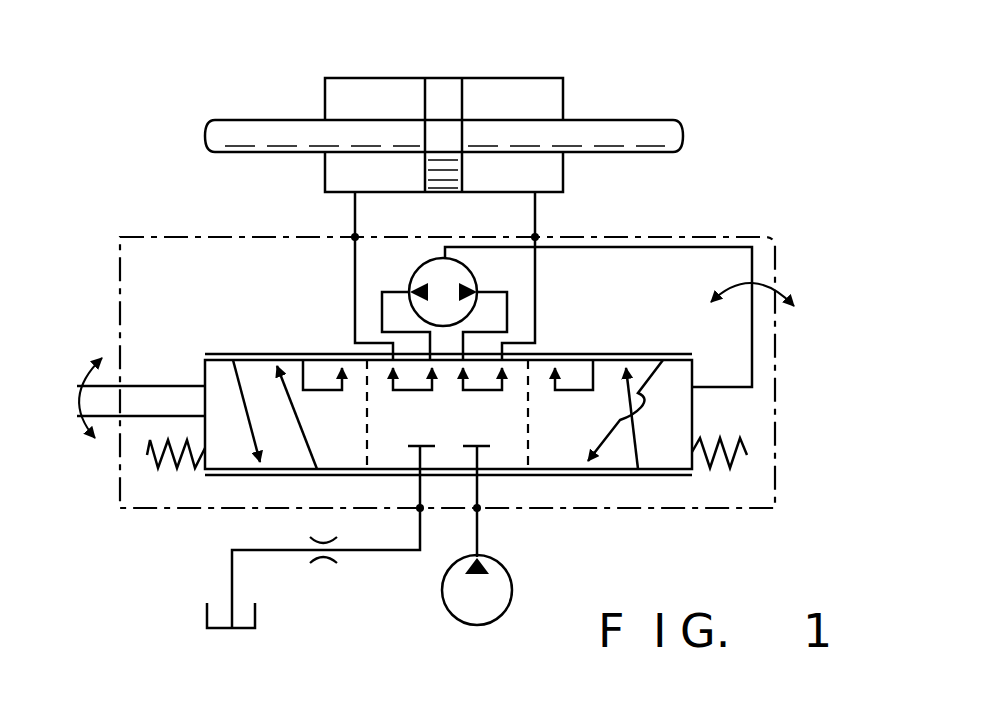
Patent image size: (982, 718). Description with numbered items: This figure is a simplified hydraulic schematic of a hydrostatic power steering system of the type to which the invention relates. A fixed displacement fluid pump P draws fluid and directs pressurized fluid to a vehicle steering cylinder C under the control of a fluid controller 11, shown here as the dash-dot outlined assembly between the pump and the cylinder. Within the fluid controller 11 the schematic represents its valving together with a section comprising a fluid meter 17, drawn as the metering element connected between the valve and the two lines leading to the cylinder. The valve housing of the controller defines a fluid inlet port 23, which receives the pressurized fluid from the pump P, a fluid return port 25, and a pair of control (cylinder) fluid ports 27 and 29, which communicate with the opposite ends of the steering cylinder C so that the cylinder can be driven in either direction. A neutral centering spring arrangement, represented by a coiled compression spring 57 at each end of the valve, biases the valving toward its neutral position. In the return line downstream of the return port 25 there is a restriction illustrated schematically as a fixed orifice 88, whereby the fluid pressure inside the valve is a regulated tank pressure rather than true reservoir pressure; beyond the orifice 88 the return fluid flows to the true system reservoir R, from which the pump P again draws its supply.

The vehicle steering cylinder C is at (520, 78).
The fluid controller 11 is at (105, 286).
The control (cylinder) fluid port 27 is at (354, 236).
The control (cylinder) fluid port 29 is at (536, 236).
The fluid meter 17 is at (414, 270).
The coiled compression spring 57 is at (147, 445).
The fluid return port 25 is at (419, 509).
The fluid inlet port 23 is at (479, 510).
The fixed displacement fluid pump P is at (511, 588).
The system reservoir R is at (207, 612).
The fixed orifice 88 is at (323, 575).